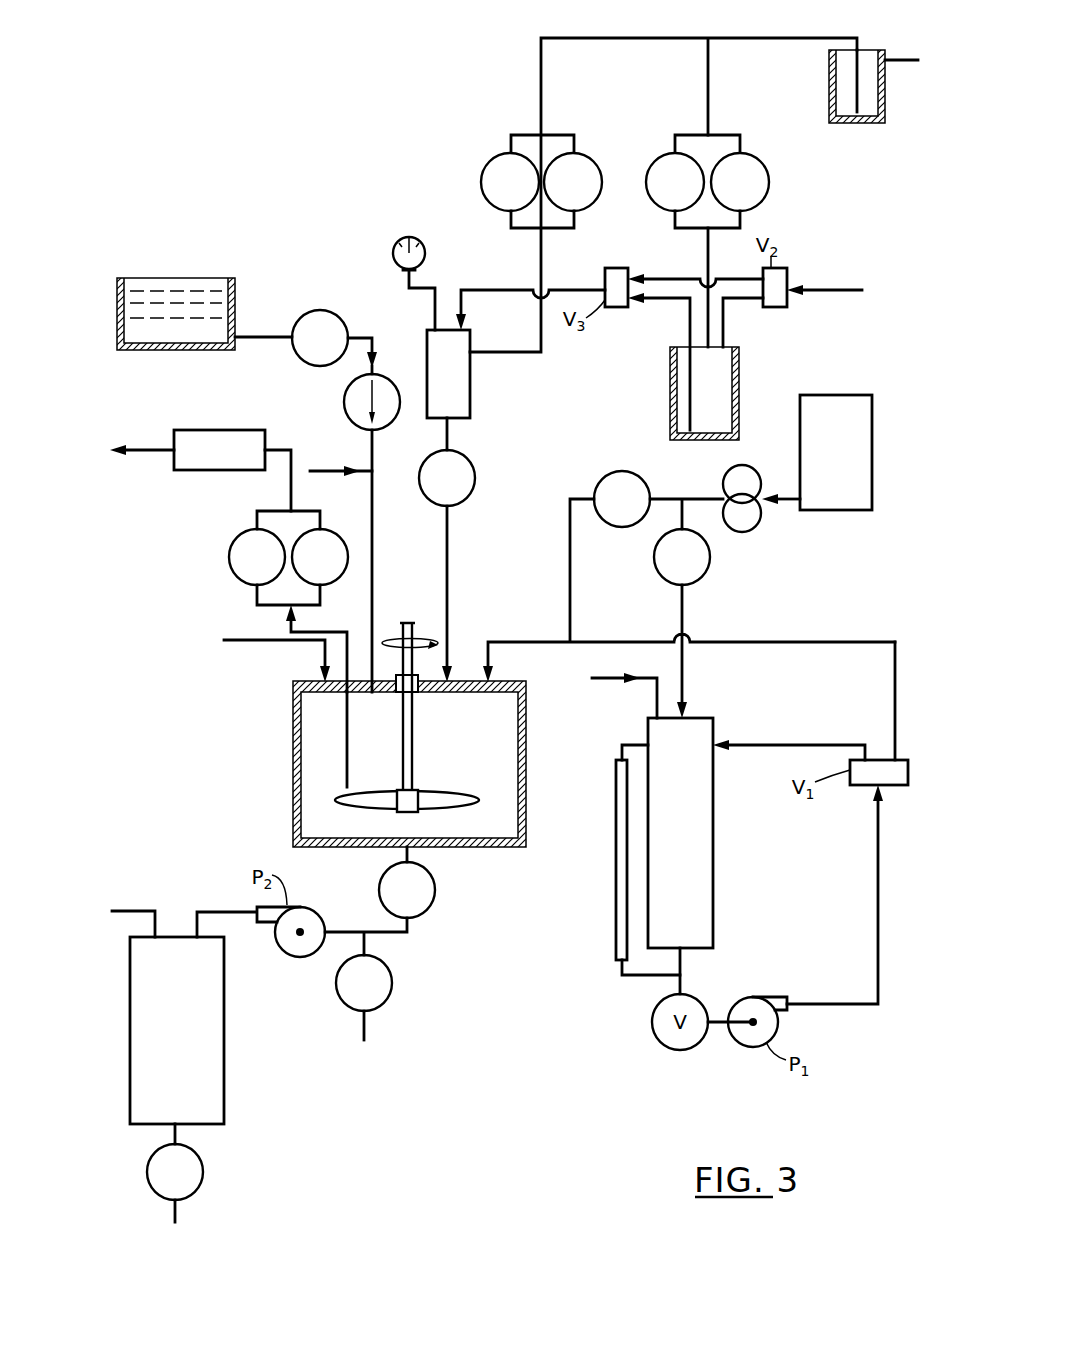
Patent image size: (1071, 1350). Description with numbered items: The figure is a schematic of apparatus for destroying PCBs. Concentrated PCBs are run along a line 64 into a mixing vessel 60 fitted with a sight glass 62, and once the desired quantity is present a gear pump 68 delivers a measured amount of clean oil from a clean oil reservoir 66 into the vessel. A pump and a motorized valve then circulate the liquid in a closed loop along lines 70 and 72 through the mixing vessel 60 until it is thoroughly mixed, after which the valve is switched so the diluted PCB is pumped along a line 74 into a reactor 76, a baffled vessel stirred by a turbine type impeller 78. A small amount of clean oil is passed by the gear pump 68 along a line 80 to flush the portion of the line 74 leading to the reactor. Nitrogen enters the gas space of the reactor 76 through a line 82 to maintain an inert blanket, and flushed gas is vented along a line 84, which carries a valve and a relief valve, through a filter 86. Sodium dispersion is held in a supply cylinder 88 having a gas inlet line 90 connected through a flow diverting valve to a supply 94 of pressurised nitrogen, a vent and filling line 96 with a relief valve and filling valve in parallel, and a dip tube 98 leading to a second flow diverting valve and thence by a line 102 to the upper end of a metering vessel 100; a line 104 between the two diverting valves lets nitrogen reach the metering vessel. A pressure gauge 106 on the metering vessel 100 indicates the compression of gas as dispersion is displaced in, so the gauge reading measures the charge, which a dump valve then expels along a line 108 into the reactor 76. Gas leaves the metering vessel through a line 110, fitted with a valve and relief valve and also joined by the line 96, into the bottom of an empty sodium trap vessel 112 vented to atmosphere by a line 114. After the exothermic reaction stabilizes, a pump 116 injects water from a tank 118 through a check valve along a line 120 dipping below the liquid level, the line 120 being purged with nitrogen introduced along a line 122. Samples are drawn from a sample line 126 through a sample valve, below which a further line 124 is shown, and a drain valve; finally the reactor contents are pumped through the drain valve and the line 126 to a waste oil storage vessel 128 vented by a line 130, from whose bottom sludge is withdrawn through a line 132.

The mixing vessel 60 is at (710, 832).
The sight glass 62 is at (616, 790).
The line 64 is at (657, 695).
The clean oil reservoir 66 is at (800, 416).
The gear pump 68 is at (752, 522).
The line 70 is at (878, 835).
The line 72 is at (800, 745).
The line 74 is at (768, 642).
The reactor 76 is at (293, 727).
The agitator 78 is at (412, 750).
The line 80 is at (570, 533).
The line 82 is at (238, 638).
The line 84 is at (335, 632).
The filter 86 is at (245, 430).
The sodium dispersion supply cylinder 88 is at (739, 378).
The gas inlet line 90 is at (725, 330).
The supply of pressurised nitrogen 94 is at (823, 288).
The vent and filling line 96 is at (706, 250).
The dip tube 98 is at (688, 320).
The metering vessel 100 is at (470, 392).
The line 102 is at (473, 288).
The line 104 is at (657, 278).
The pressure gauge 106 is at (396, 246).
The line 108 is at (449, 585).
The line 110 is at (560, 38).
The sodium trap vessel 112 is at (829, 82).
The line 114 is at (905, 98).
The pump 116 is at (321, 310).
The tank 118 is at (236, 290).
The line 120 is at (374, 540).
The line 122 is at (325, 468).
The drain line 124 is at (366, 1032).
The sample line 126 is at (347, 920).
The waste oil storage vessel 128 is at (217, 1032).
The line 130 is at (138, 909).
The line 132 is at (178, 1210).